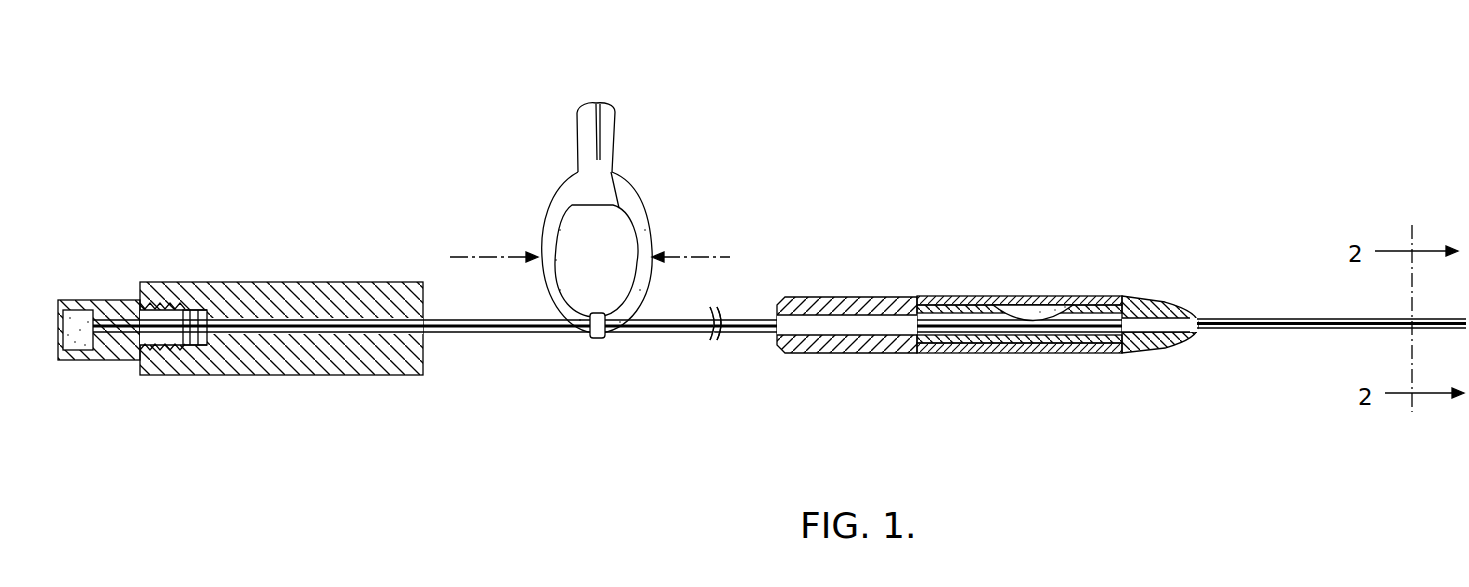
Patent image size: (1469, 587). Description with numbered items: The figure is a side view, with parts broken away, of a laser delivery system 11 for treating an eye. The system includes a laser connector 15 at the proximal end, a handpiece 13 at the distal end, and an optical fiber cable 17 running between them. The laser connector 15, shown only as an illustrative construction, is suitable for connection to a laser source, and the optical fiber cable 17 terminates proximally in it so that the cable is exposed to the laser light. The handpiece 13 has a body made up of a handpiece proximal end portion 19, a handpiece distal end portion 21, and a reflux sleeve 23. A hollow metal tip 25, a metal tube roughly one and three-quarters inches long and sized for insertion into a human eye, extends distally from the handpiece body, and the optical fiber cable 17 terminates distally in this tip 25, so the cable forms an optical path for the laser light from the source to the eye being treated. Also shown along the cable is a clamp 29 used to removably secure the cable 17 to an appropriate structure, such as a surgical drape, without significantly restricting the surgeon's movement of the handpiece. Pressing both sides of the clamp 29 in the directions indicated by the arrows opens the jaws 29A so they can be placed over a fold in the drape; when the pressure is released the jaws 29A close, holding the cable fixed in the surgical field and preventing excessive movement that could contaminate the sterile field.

The laser delivery system 11 is at (751, 433).
The handpiece 13 is at (987, 345).
The laser connector 15 is at (300, 282).
The optical fiber cable 17 is at (493, 337).
The handpiece proximal end portion 19 is at (850, 297).
The handpiece distal end portion 21 is at (1160, 340).
The reflux sleeve 23 is at (993, 306).
The hollow metal tip 25 is at (1305, 329).
The clamp 29 is at (550, 197).
The jaws 29A is at (613, 113).